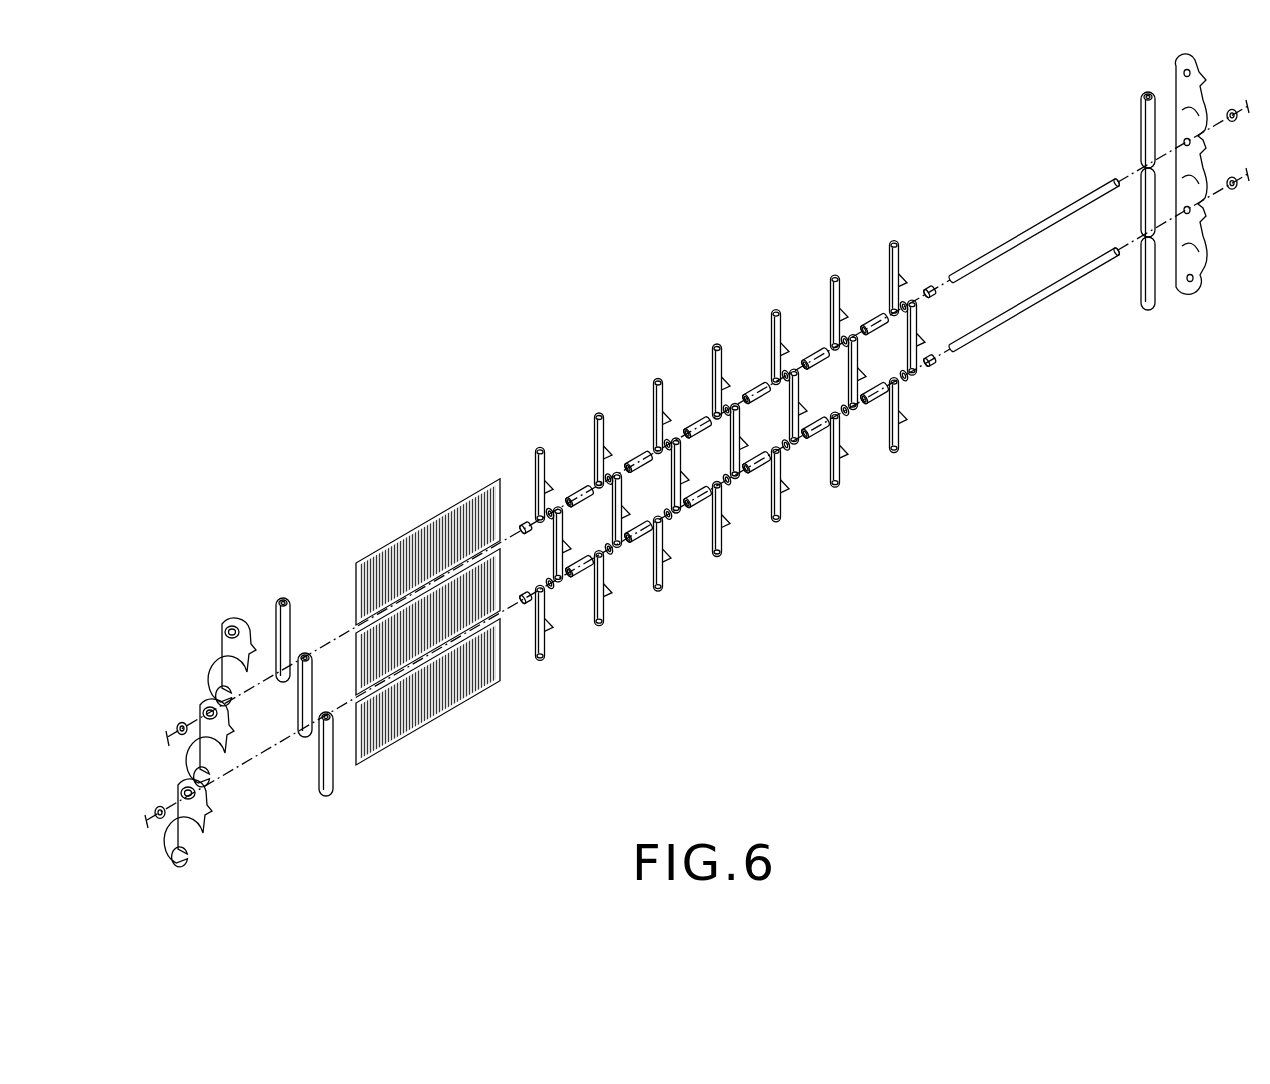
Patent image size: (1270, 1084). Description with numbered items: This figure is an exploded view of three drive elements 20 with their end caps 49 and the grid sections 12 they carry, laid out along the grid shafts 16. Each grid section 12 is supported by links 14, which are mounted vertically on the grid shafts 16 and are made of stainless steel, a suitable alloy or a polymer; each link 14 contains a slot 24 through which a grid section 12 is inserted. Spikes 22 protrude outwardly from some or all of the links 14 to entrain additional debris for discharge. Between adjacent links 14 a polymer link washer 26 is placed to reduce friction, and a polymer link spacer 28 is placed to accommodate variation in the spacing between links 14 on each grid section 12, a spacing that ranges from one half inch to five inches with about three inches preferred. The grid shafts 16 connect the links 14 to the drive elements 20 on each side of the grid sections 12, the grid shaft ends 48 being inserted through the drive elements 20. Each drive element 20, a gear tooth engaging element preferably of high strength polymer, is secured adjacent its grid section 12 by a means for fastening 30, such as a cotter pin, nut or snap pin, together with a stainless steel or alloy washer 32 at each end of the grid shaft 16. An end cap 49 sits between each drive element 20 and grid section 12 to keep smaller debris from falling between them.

The grid section 12 is at (447, 508).
The link 14 is at (660, 380).
The grid shaft 16 is at (1050, 215).
The drive element 20 is at (216, 658).
The spike 22 is at (916, 414).
The slot 24 is at (835, 278).
The link washer 26 is at (610, 555).
The link spacer 28 is at (756, 474).
The means for fastening 30 is at (166, 740).
The washer 32 is at (150, 816).
The grid shaft end 48 is at (1120, 180).
The end cap 49 is at (284, 600).